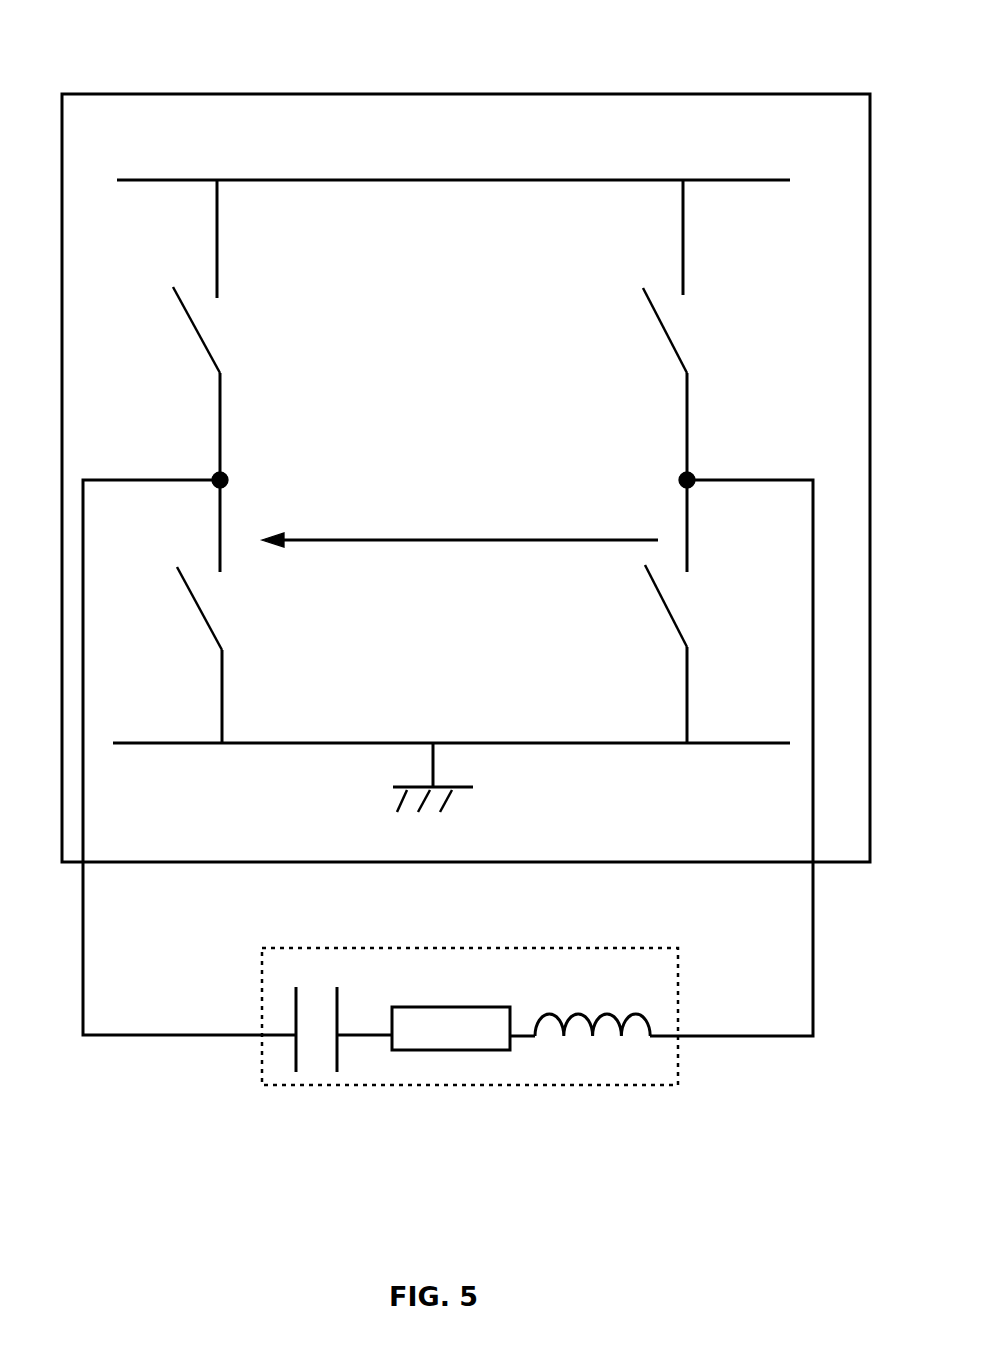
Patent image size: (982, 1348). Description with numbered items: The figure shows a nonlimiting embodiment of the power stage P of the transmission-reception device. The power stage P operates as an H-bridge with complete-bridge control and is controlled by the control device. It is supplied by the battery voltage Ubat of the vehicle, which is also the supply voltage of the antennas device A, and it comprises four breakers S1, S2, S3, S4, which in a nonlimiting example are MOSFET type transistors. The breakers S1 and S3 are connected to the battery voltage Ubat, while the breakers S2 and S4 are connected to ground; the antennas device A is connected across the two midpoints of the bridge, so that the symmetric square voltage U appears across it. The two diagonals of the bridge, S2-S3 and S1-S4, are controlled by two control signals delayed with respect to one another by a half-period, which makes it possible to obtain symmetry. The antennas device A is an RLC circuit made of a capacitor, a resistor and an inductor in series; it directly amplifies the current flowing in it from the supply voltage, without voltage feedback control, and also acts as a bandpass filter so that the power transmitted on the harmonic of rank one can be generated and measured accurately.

The power stage P is at (470, 94).
The battery voltage Ubat is at (453, 157).
The breaker S1 is at (164, 330).
The breaker S2 is at (165, 611).
The breaker S3 is at (706, 330).
The breaker S4 is at (706, 611).
The voltage U is at (460, 565).
The antennas device A is at (457, 1087).